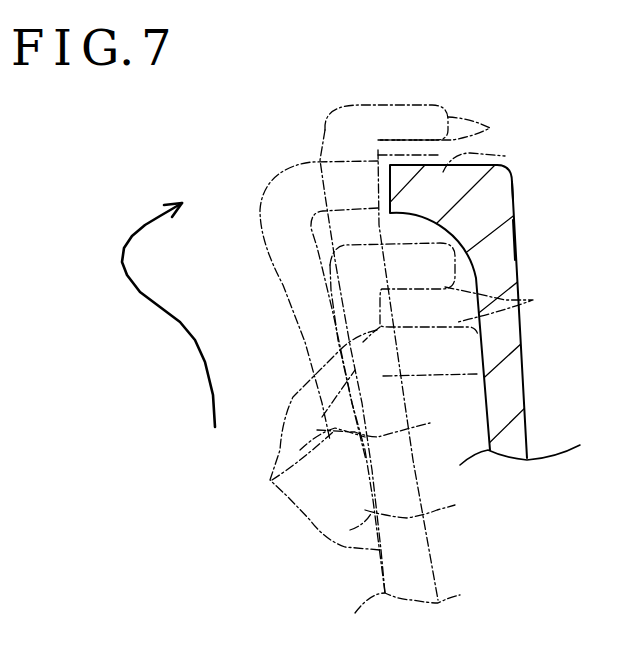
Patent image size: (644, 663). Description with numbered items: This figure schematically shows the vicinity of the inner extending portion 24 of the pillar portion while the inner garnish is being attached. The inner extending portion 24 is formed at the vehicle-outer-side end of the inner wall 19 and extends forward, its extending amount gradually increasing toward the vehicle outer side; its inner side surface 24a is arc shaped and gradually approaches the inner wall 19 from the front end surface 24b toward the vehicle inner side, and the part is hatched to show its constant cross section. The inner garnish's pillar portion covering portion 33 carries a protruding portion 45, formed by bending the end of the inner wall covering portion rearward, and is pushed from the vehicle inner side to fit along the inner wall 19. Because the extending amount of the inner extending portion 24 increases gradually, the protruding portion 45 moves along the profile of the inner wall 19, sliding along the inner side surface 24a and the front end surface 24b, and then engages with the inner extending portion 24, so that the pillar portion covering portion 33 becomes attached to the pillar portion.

The protruding portion 45 is at (533, 300).
The inner extending portion 24 is at (459, 299).
The front end surface 24b is at (513, 192).
The inner side surface 24a is at (514, 241).
The inner wall 19 is at (505, 388).
The pillar portion covering portion 33 is at (377, 482).